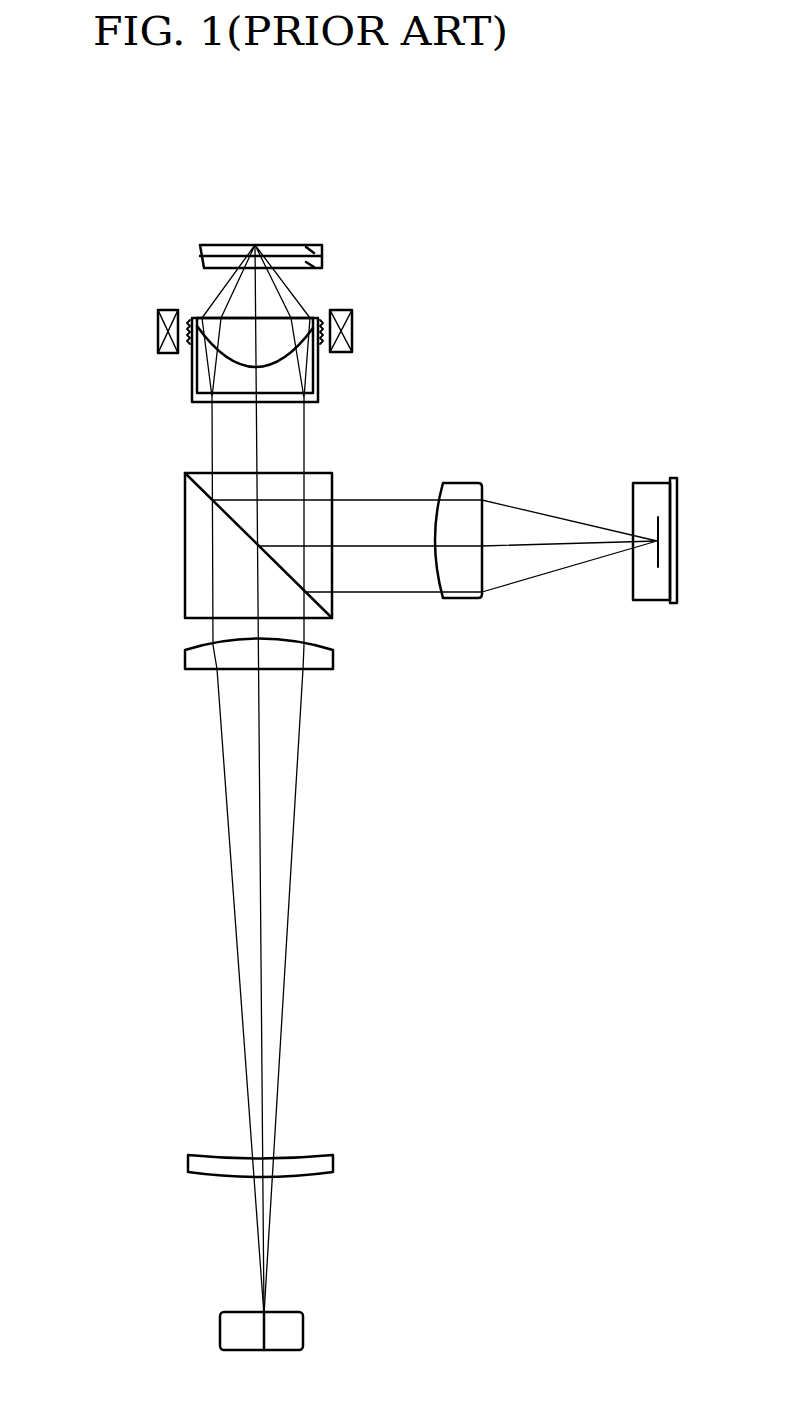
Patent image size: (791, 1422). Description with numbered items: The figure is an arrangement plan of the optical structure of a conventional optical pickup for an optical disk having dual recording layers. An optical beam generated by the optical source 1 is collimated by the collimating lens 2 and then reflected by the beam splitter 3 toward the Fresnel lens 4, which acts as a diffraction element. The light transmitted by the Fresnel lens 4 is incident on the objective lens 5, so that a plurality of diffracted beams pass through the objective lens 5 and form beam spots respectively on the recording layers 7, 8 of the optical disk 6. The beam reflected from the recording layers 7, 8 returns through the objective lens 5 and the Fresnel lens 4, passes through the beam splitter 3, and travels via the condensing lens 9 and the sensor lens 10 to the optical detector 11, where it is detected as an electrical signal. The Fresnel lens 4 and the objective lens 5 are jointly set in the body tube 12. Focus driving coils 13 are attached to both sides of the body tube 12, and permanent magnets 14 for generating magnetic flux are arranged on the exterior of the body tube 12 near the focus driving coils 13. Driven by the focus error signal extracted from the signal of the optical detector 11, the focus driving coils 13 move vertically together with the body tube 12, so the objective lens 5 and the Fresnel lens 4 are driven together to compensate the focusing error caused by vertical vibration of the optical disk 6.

The optical source 1 is at (653, 600).
The collimating lens 2 is at (465, 598).
The beam splitter 3 is at (183, 555).
The Fresnel lens 4 is at (210, 403).
The objective lens 5 is at (233, 322).
The optical disk 6 is at (229, 229).
The recording layer 7 is at (320, 250).
The recording layer 8 is at (325, 268).
The condensing lens 9 is at (187, 667).
The sensor lens 10 is at (333, 1157).
The optical detector 11 is at (303, 1320).
The body tube 12 is at (193, 370).
The focus driving coils 13 is at (323, 343).
The permanent magnets 14 is at (353, 333).